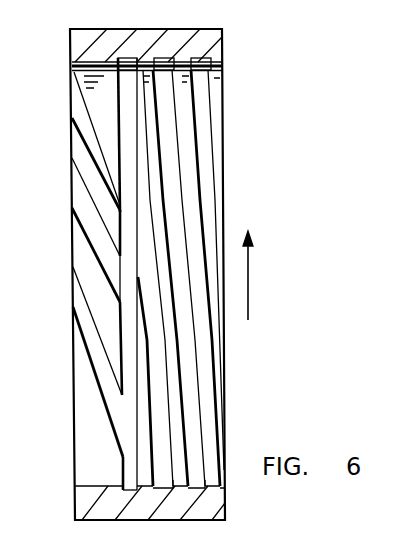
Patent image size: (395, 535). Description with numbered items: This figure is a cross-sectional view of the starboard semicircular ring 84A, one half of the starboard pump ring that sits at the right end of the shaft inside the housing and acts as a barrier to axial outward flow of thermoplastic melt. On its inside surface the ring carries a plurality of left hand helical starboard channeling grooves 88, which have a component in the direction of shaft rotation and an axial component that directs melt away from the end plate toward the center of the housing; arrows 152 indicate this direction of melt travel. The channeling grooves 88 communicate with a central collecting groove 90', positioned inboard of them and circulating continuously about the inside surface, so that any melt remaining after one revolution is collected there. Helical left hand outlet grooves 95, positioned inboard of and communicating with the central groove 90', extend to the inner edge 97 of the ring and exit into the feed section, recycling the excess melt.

The starboard semicircular ring 84A is at (224, 43).
The central collecting groove 90' is at (81, 274).
The inner edge 97 is at (70, 143).
The helical left hand outlet grooves 95 is at (73, 208).
The starboard channeling grooves 88 is at (150, 253).
The arrows 152 is at (250, 290).